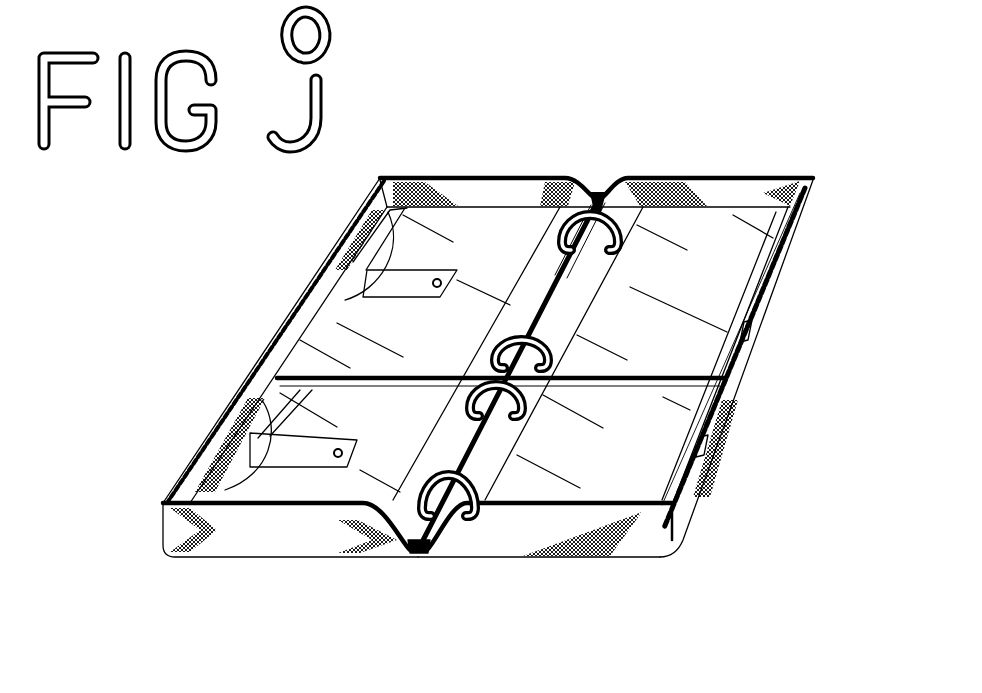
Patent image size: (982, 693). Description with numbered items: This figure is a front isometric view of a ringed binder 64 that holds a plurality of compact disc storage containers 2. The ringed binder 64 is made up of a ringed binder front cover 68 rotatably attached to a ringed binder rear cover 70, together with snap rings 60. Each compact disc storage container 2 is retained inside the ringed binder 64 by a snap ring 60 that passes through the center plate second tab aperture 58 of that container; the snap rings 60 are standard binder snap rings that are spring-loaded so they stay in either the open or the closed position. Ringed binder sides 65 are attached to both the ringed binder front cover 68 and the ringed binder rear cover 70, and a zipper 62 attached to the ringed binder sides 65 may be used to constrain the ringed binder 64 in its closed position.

The compact disc storage container 2 is at (728, 302).
The center plate second tab aperture 58 is at (557, 240).
The snap ring 60 is at (598, 200).
The zipper 62 is at (711, 172).
The ringed binder 64 is at (817, 186).
The ringed binder sides 65 is at (745, 325).
The ringed binder front cover 68 is at (242, 558).
The ringed binder rear cover 70 is at (633, 558).